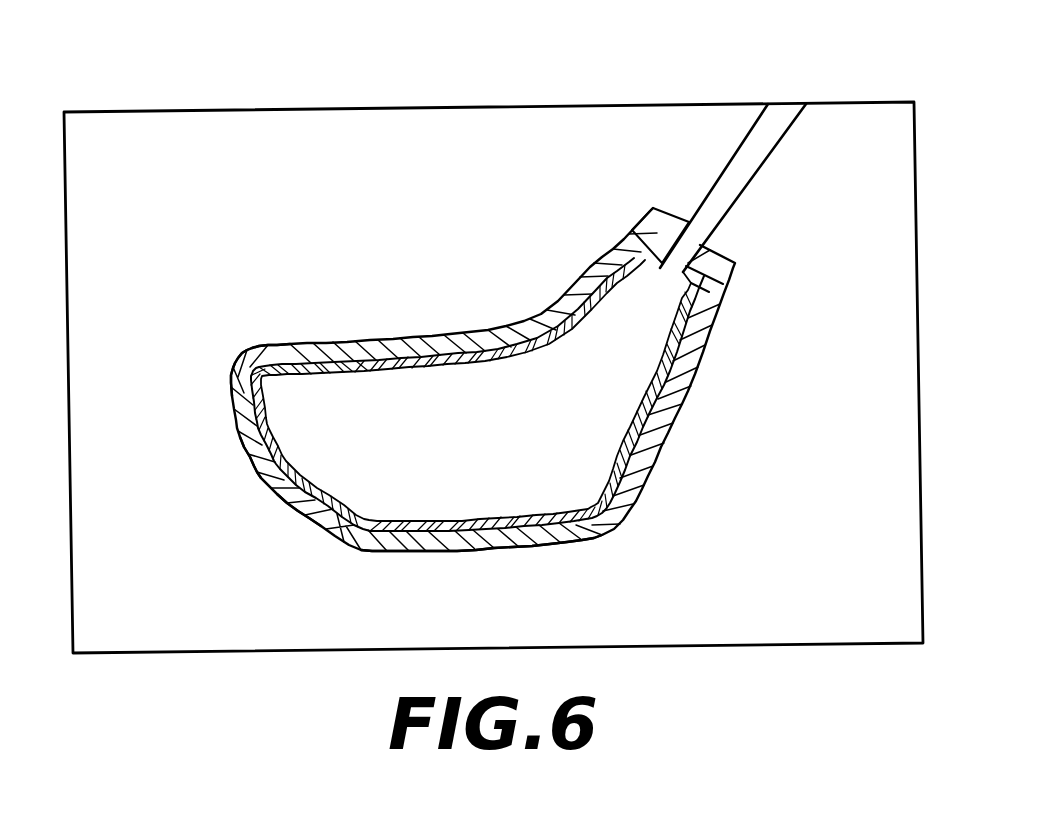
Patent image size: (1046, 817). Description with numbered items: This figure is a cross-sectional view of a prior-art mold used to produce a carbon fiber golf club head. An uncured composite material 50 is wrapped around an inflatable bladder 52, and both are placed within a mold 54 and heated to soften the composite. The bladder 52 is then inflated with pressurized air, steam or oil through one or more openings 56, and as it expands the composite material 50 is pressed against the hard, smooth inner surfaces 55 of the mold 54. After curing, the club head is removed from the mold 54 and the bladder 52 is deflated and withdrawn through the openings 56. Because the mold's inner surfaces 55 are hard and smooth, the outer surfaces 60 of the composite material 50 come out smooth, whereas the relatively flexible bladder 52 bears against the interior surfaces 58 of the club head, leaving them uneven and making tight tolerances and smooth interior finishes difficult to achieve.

The uncured composite material 50 is at (345, 352).
The inflatable bladder 52 is at (410, 363).
The mold 54 is at (428, 132).
The inner surfaces of the mold 55 is at (302, 515).
The openings 56 is at (712, 215).
The interior surfaces of the club head 58 is at (388, 540).
The outer surfaces of the composite material 60 is at (267, 347).